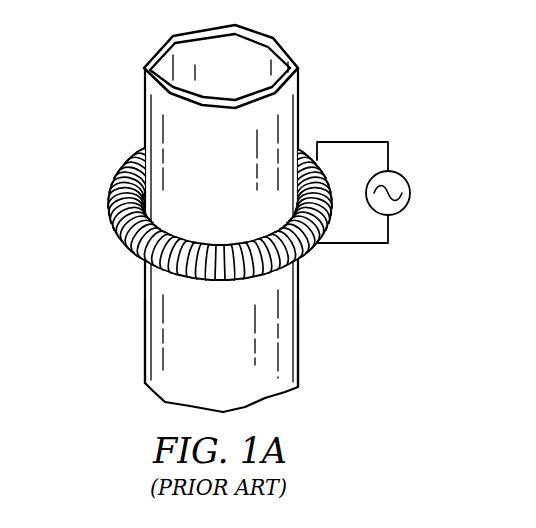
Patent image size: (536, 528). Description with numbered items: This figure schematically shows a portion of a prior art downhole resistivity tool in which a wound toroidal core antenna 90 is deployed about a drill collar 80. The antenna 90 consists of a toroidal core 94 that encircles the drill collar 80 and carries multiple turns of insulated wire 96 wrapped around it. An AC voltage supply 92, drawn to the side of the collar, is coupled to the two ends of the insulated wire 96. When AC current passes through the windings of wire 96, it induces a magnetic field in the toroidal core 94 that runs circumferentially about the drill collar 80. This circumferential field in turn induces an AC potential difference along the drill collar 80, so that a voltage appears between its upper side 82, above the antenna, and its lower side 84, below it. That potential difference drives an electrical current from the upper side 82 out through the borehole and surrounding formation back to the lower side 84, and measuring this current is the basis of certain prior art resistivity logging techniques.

The drill collar 80 is at (223, 218).
The upper side 82 is at (143, 128).
The lower side 84 is at (143, 335).
The wound toroidal core antenna 90 is at (88, 177).
The AC voltage supply 92 is at (410, 193).
The toroidal core 94 is at (223, 283).
The insulated wire 96 is at (201, 232).